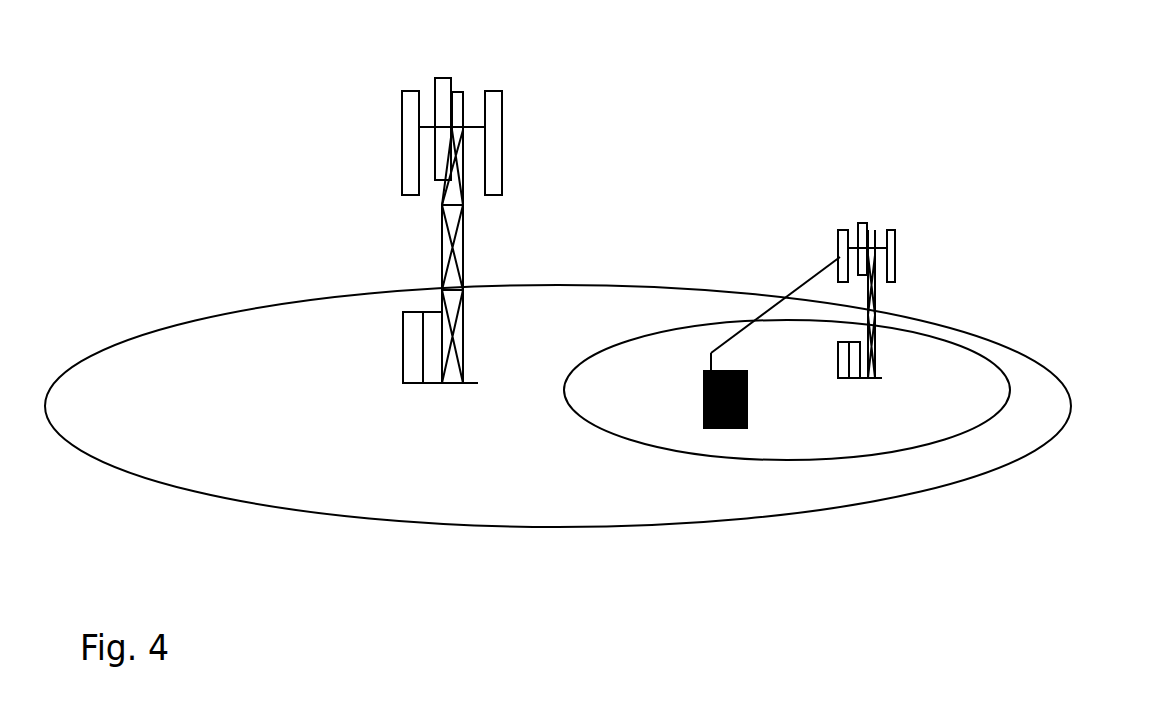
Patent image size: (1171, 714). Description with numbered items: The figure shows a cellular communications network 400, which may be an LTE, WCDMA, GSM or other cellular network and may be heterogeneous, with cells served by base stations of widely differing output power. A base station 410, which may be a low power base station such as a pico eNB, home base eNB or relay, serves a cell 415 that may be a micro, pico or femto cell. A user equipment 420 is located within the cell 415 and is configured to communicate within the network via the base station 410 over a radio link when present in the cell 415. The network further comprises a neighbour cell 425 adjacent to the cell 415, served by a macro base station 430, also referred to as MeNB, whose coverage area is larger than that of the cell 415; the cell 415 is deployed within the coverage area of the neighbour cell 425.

The cellular communications network 400 is at (1042, 490).
The base station 410 is at (808, 280).
The cell 415 is at (1003, 372).
The user equipment 420 is at (704, 407).
The neighbour cell 425 is at (287, 305).
The macro base station 430 is at (402, 125).